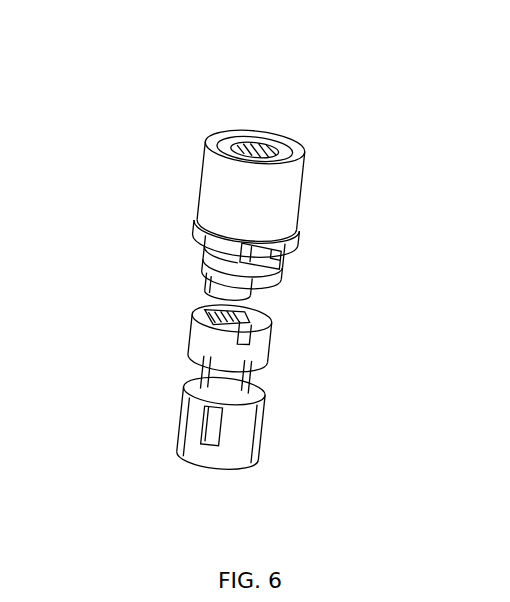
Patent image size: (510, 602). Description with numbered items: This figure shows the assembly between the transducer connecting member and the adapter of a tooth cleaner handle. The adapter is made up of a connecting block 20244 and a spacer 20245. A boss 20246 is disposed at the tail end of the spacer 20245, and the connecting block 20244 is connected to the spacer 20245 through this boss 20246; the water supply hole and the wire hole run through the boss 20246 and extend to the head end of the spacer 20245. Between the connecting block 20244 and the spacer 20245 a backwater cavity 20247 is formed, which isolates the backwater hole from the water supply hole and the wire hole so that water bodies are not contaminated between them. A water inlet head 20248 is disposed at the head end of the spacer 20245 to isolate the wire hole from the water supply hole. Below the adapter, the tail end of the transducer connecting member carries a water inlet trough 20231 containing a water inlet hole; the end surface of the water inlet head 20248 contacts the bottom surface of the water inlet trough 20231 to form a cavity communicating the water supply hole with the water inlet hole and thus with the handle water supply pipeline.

The connecting block 20244 is at (233, 202).
The spacer 20245 is at (268, 275).
The boss 20246 is at (213, 247).
The backwater cavity 20247 is at (260, 257).
The water inlet head 20248 is at (222, 292).
The water inlet trough 20231 is at (221, 322).